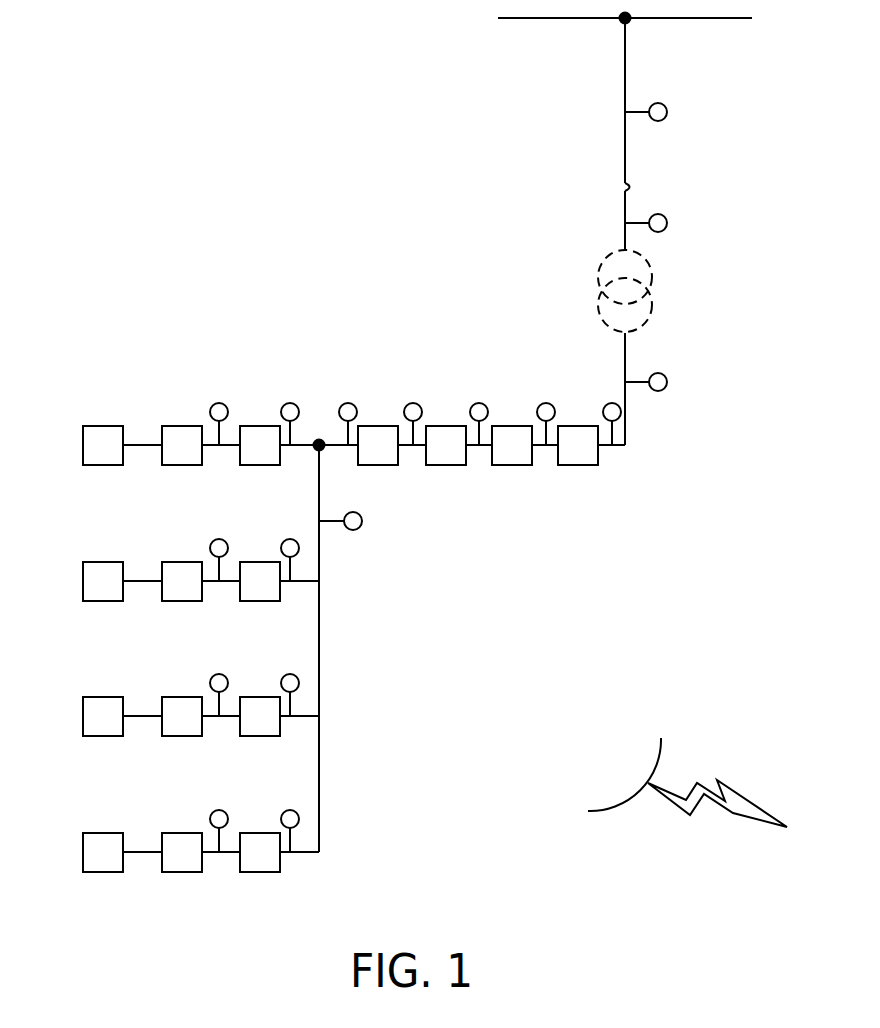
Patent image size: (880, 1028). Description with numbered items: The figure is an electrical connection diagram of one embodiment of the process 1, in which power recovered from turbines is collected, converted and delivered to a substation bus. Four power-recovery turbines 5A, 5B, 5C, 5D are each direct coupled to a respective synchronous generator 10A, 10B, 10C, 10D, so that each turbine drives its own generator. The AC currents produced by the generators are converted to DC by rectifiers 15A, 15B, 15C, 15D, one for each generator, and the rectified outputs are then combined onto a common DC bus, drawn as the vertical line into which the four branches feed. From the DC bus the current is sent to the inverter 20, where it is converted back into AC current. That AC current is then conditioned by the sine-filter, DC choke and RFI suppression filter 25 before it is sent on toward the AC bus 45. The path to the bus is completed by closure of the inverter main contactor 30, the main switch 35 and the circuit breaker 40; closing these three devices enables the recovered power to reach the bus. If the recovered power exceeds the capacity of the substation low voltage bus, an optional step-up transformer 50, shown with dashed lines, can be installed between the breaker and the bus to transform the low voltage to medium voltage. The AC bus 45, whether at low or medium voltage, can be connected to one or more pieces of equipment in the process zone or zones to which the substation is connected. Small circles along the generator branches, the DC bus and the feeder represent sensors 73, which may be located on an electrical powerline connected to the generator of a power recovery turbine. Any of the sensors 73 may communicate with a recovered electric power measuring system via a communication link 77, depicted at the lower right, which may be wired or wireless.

The process 1 is at (98, 105).
The power-recovery turbine 5A is at (83, 457).
The power-recovery turbine 5B is at (83, 593).
The power-recovery turbine 5C is at (83, 728).
The power-recovery turbine 5D is at (83, 864).
The synchronous generator 10A is at (162, 457).
The synchronous generator 10B is at (162, 593).
The synchronous generator 10C is at (162, 728).
The synchronous generator 10D is at (162, 864).
The rectifier 15A is at (240, 457).
The rectifier 15B is at (240, 593).
The rectifier 15C is at (240, 728).
The rectifier 15D is at (240, 864).
The inverter 20 is at (378, 466).
The sine-filter, DC choke and RFI suppression filter 25 is at (446, 466).
The inverter main contactor 30 is at (512, 466).
The main switch 35 is at (578, 466).
The circuit breaker 40 is at (630, 187).
The AC bus 45 is at (702, 20).
The step-up transformer 50 is at (651, 309).
The sensor 73 is at (682, 133).
The wired or wireless communication 77 is at (753, 817).